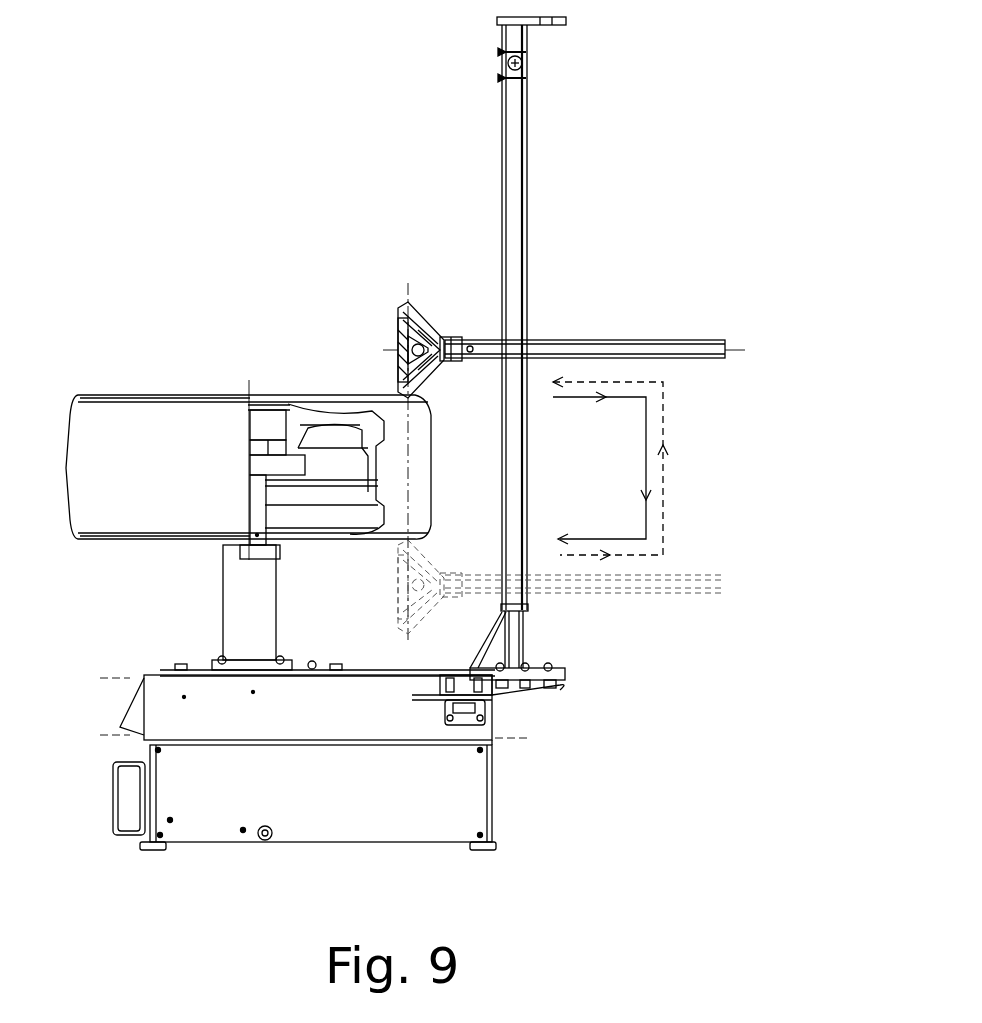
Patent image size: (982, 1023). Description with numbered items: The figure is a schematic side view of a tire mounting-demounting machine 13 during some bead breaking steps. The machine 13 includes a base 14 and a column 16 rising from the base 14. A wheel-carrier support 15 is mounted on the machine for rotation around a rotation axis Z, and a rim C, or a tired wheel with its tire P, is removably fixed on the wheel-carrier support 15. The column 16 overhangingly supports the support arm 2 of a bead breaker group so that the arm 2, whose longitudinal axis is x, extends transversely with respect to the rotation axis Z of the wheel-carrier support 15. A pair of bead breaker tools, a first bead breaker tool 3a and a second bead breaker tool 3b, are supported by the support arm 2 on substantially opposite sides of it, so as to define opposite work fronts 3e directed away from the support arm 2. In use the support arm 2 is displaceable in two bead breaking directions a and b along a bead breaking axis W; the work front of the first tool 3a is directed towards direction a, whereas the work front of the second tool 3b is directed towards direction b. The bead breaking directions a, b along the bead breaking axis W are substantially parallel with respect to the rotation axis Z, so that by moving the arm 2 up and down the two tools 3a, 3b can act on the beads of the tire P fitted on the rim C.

The support arm 2 is at (549, 341).
The first bead breaker tool 3a is at (425, 364).
The second bead breaker tool 3b is at (420, 312).
The work fronts 3e is at (404, 306).
The tire mounting-demounting machine 13 is at (570, 622).
The base 14 is at (495, 812).
The wheel-carrier support 15 is at (284, 463).
The column 16 is at (528, 198).
The tire P is at (132, 394).
The rim C is at (334, 412).
The bead breaking axis W is at (409, 464).
The rotation axis Z is at (247, 470).
The longitudinal axis x is at (562, 350).
The bead breaking direction a is at (640, 504).
The bead breaking direction b is at (702, 467).